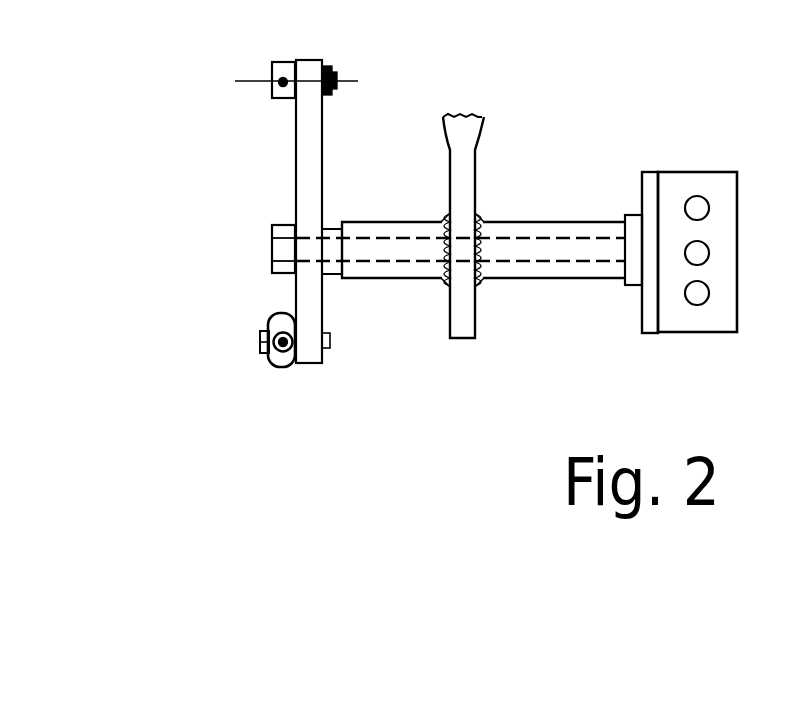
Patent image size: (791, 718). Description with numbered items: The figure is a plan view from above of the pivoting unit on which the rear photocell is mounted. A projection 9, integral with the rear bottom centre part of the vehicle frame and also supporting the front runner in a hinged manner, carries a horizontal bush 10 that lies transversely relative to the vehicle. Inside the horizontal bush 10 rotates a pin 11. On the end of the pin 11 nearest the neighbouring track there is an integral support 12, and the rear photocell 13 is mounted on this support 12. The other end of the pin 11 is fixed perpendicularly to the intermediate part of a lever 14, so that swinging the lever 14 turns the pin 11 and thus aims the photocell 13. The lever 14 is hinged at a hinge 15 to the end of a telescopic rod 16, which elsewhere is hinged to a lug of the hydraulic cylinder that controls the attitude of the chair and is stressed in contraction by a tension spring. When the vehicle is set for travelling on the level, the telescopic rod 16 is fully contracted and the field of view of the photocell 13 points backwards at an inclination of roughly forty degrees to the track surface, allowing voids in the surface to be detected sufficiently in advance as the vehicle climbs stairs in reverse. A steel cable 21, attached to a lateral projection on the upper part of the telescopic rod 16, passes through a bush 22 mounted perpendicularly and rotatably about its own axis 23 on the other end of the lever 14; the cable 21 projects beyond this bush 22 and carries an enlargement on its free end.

The projection 9 is at (472, 130).
The horizontal bush 10 is at (393, 280).
The pin 11 is at (399, 237).
The support 12 is at (652, 172).
The rear photocell 13 is at (698, 345).
The lever 14 is at (288, 165).
The hinge 15 is at (262, 334).
The telescopic rod 16 is at (284, 378).
The steel cable 21 is at (276, 79).
The bush 22 is at (280, 62).
The axis 23 is at (347, 80).